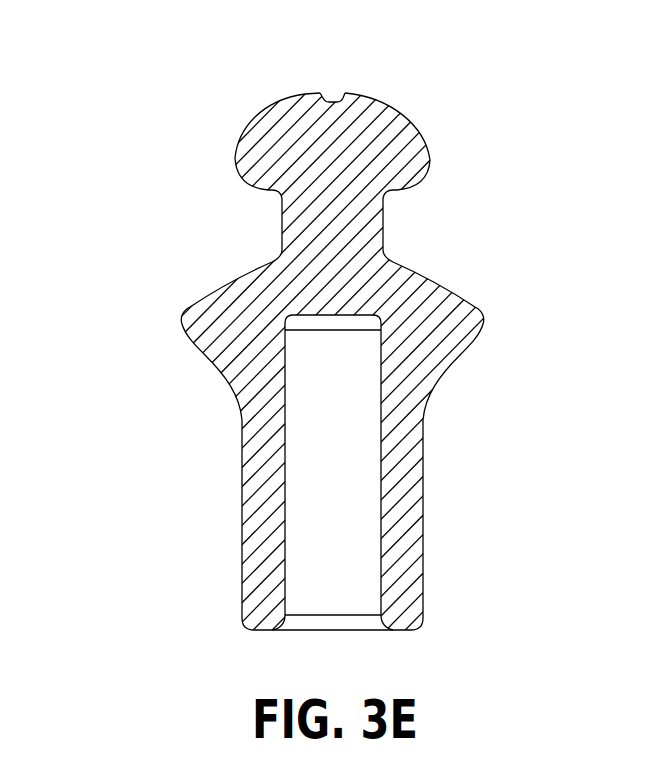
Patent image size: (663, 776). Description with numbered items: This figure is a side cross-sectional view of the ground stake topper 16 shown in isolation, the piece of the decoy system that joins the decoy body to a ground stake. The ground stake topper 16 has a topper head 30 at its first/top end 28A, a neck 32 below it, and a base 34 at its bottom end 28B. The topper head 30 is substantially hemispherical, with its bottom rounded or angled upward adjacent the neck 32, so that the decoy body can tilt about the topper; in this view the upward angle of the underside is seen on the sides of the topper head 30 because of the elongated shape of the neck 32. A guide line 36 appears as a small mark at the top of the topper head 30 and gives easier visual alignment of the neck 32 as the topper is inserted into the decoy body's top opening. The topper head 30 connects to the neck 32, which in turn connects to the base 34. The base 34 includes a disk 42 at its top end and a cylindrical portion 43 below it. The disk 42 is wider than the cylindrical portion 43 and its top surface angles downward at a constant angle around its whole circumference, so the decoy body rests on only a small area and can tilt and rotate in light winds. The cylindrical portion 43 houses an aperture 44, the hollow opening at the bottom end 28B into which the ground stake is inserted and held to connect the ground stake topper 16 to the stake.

The ground stake topper 16 is at (130, 155).
The first/top end 28A is at (278, 104).
The bottom end 28B is at (267, 632).
The topper head 30 is at (260, 158).
The neck 32 is at (280, 245).
The base 34 is at (242, 522).
The guide line 36 is at (332, 100).
The disk 42 is at (428, 308).
The cylindrical portion 43 is at (410, 507).
The aperture 44 is at (360, 555).